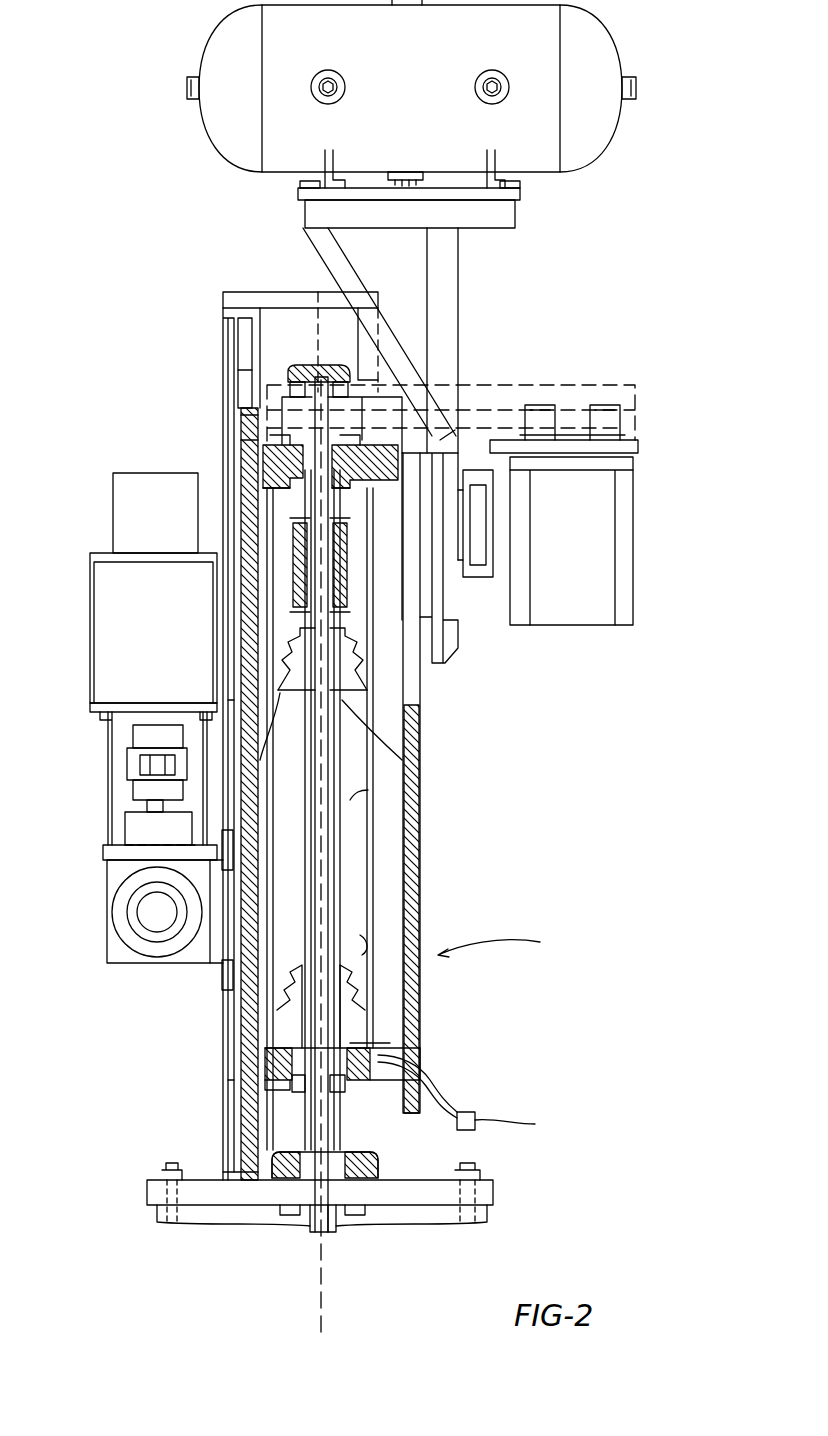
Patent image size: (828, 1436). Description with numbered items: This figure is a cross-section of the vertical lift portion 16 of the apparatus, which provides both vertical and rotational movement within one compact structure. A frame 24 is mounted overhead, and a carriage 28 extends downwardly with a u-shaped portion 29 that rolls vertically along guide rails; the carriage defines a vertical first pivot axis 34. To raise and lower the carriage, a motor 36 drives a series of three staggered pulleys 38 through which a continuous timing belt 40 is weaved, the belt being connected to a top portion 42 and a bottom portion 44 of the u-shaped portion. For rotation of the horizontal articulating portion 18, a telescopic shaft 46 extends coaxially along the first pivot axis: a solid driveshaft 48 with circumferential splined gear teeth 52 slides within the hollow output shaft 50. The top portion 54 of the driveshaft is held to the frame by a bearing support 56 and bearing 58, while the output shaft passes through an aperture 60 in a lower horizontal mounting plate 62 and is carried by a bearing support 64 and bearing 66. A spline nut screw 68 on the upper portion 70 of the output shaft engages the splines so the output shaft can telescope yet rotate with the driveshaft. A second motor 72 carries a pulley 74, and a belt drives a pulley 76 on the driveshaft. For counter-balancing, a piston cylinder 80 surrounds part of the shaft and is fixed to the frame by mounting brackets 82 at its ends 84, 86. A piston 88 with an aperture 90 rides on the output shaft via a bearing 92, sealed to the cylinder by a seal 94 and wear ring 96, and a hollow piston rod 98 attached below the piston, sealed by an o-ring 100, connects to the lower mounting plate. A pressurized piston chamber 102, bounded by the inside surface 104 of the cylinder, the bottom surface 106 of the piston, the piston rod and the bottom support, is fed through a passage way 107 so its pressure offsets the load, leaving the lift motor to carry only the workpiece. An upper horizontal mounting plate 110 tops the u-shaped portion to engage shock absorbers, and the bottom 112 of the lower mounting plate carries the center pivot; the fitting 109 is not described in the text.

The vertical lift portion 16 is at (510, 941).
The horizontal articulating portion 18 is at (560, 385).
The frame 24 is at (423, 836).
The carriage 28 is at (248, 1048).
The u-shaped portion 29 is at (241, 425).
The first pivot axis 34 is at (323, 1320).
The motor 36 is at (100, 598).
The pulleys 38 is at (125, 845).
The timing belt 40 is at (232, 1010).
The top portion 42 is at (223, 318).
The bottom portion 44 is at (240, 1166).
The telescopic shaft 46 is at (345, 822).
The driveshaft 48 is at (292, 485).
The output shaft 50 is at (310, 1138).
The splined gear teeth 52 is at (447, 605).
The top portion 54 is at (332, 400).
The bearing support 56 is at (302, 375).
The bearing 58 is at (312, 384).
The aperture 60 is at (318, 1228).
The lower horizontal mounting plate 62 is at (440, 1196).
The bearing support 64 is at (380, 1160).
The bearing 66 is at (364, 1206).
The spline nut screw 68 is at (293, 560).
The upper portion 70 is at (333, 578).
The second motor 72 is at (602, 510).
The pulley 74 is at (592, 400).
The pulley 76 is at (445, 430).
The piston cylinder 80 is at (375, 870).
The mounting brackets 82 is at (455, 440).
The end 84 is at (472, 530).
The end 86 is at (392, 1060).
The piston 88 is at (332, 690).
The aperture 90 is at (332, 702).
The bearing 92 is at (310, 630).
The seal 94 is at (347, 668).
The wear ring 96 is at (300, 690).
The piston rod 98 is at (342, 900).
The o-ring 100 is at (185, 775).
The pressurized piston chamber 102 is at (355, 802).
The inside surface 104 is at (368, 940).
The bottom surface 106 is at (135, 735).
The passage way 107 is at (402, 1085).
The fitting 109 is at (476, 1124).
The upper horizontal mounting plate 110 is at (223, 297).
The bottom 112 is at (358, 975).